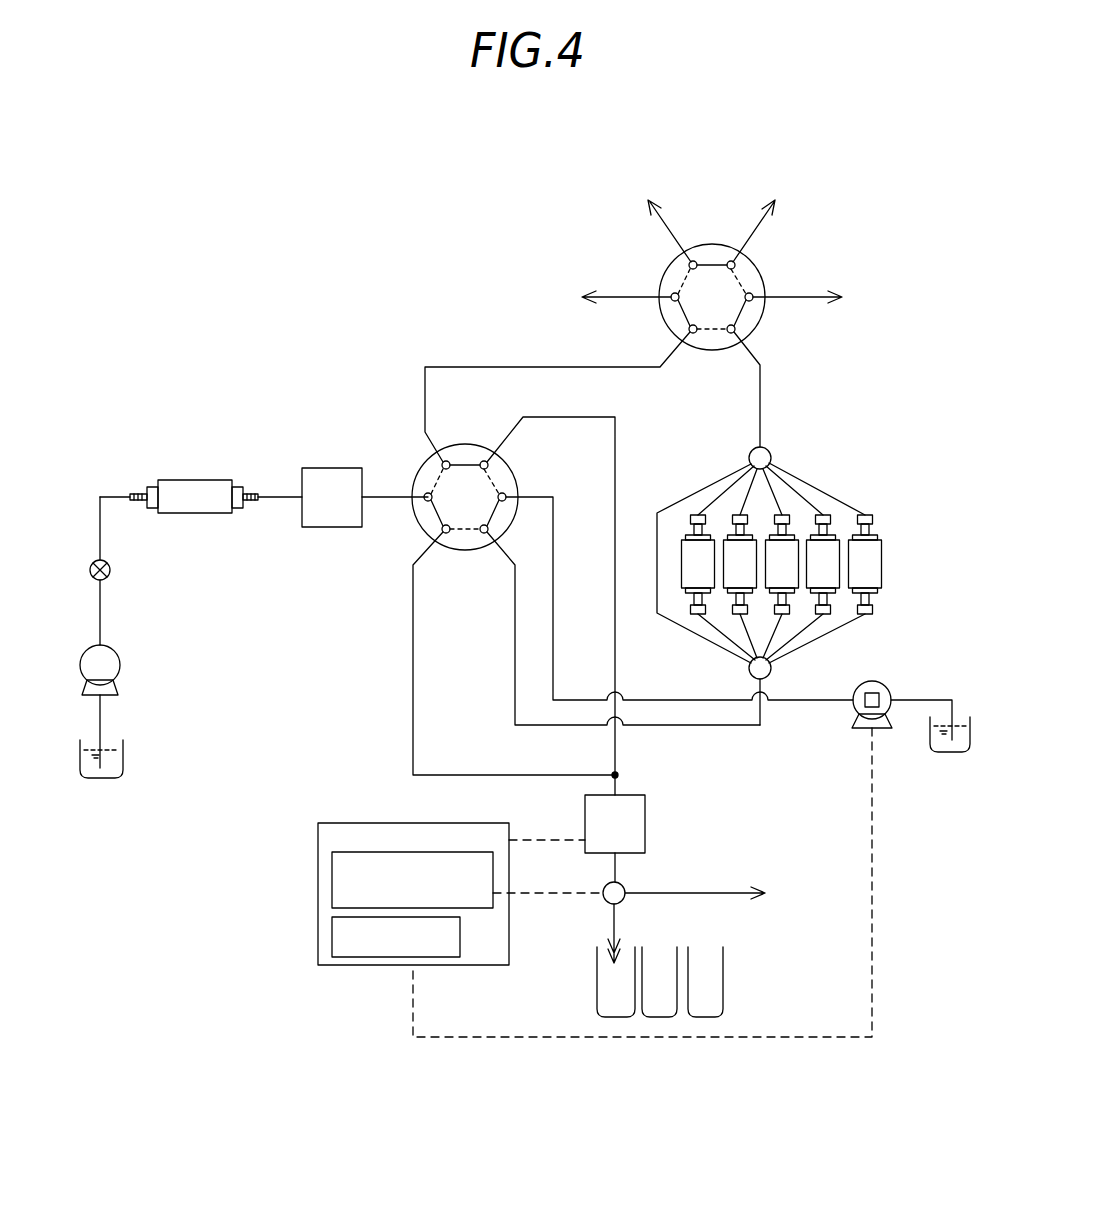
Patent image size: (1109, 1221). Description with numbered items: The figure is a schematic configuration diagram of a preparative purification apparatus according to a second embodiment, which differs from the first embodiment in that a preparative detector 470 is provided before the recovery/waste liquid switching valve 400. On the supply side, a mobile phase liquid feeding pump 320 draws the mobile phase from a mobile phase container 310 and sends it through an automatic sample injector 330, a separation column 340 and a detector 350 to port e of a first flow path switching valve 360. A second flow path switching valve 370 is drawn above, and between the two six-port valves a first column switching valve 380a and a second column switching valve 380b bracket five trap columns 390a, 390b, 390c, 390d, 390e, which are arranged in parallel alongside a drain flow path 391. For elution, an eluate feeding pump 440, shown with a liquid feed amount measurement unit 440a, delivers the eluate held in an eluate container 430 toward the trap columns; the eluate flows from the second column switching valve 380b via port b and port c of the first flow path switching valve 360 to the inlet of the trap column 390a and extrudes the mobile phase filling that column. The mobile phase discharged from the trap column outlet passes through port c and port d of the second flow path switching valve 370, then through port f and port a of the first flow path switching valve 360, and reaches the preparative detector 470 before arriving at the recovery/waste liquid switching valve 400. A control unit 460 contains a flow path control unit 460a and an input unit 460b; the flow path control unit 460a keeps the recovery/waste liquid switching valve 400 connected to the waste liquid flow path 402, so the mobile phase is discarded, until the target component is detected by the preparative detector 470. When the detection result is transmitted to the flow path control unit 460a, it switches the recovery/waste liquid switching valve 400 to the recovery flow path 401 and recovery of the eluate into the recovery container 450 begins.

The mobile phase container 310 is at (100, 780).
The mobile phase liquid feeding pump 320 is at (121, 665).
The automatic sample injector 330 is at (111, 569).
The separation column 340 is at (178, 481).
The detector 350 is at (312, 468).
The first flow path switching valve 360 is at (467, 551).
The second flow path switching valve 370 is at (712, 351).
The first column switching valve 380a is at (768, 447).
The second column switching valve 380b is at (772, 675).
The trap column 390a is at (692, 613).
The trap column 390b is at (732, 613).
The trap column 390c is at (790, 516).
The trap column 390d is at (836, 517).
The trap column 390e is at (873, 516).
The drain flow path 391 is at (693, 495).
The recovery/waste liquid switching valve 400 is at (625, 886).
The recovery flow path 401 is at (617, 922).
The waste liquid flow path 402 is at (734, 892).
The eluate container 430 is at (947, 754).
The eluate feeding pump 440 is at (884, 685).
The liquid feed amount measurement unit 440a is at (862, 707).
The recovery container 450 is at (597, 986).
The control unit 460 is at (318, 849).
The flow path control unit 460a is at (332, 890).
The input unit 460b is at (332, 940).
The preparative detector 470 is at (648, 822).